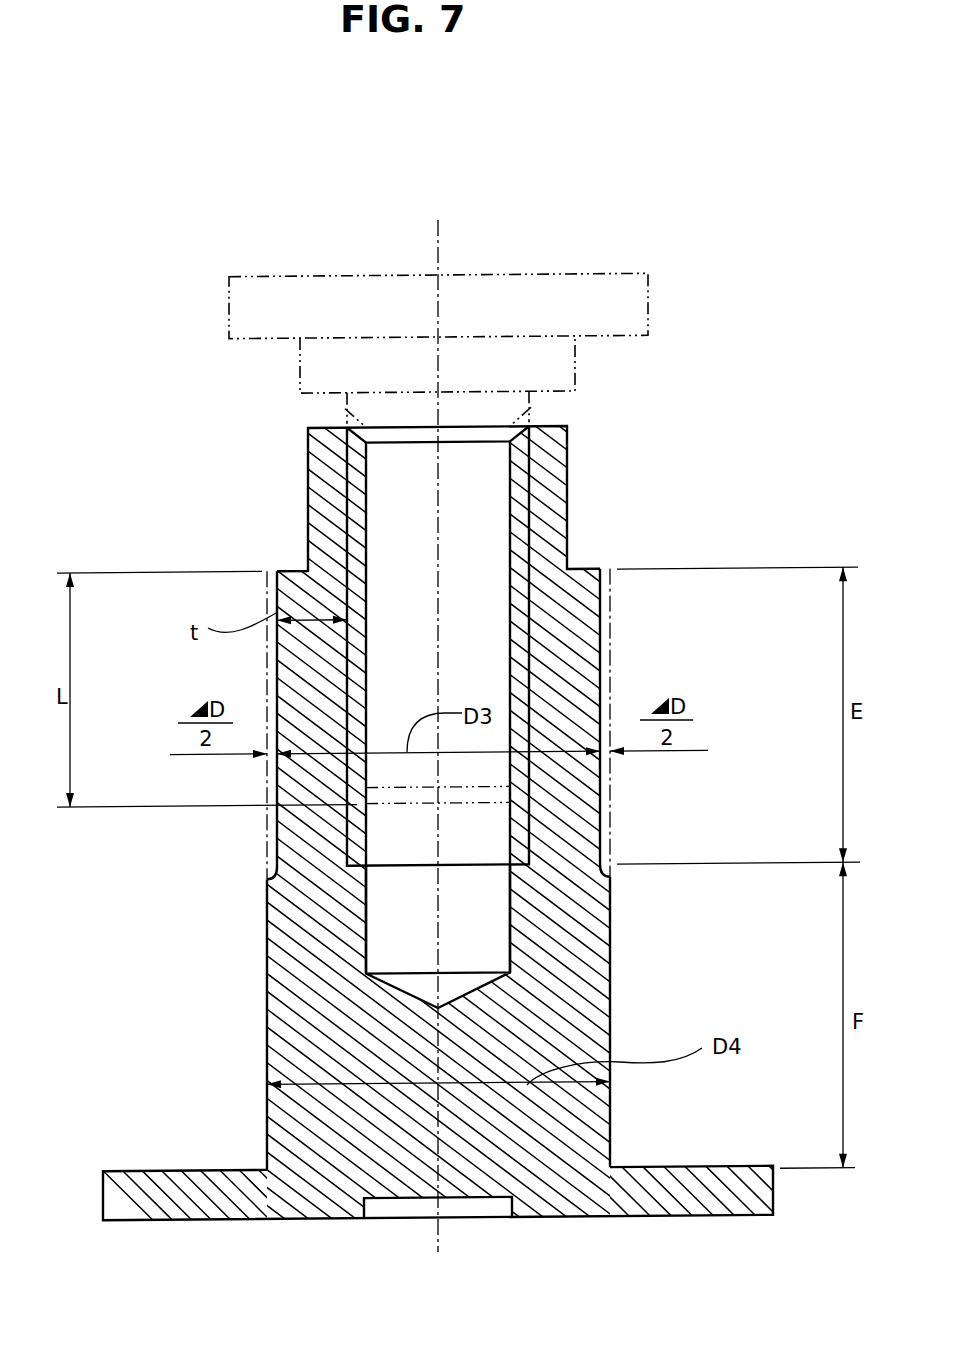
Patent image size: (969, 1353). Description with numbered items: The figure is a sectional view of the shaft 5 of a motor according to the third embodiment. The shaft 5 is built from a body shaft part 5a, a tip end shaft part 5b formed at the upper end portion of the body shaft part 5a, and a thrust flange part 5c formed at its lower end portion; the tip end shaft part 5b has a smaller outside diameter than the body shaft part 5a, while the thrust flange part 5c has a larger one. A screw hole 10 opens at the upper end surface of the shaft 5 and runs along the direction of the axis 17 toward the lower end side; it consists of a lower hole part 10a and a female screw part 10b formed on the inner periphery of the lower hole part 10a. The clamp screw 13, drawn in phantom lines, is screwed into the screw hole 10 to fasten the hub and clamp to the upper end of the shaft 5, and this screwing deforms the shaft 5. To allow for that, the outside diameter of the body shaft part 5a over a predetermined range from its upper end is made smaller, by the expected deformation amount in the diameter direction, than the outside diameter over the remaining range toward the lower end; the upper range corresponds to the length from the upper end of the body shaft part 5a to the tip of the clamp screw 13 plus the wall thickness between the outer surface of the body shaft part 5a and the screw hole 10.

The shaft 5 is at (630, 926).
The body shaft part 5a is at (577, 990).
The tip end shaft part 5b is at (567, 472).
The thrust flange part 5c is at (160, 1200).
The screw hole 10 is at (420, 652).
The lower hole part 10a is at (367, 893).
The female screw part 10b is at (511, 550).
The clamp screw 13 is at (568, 277).
The axis 17 is at (433, 1218).